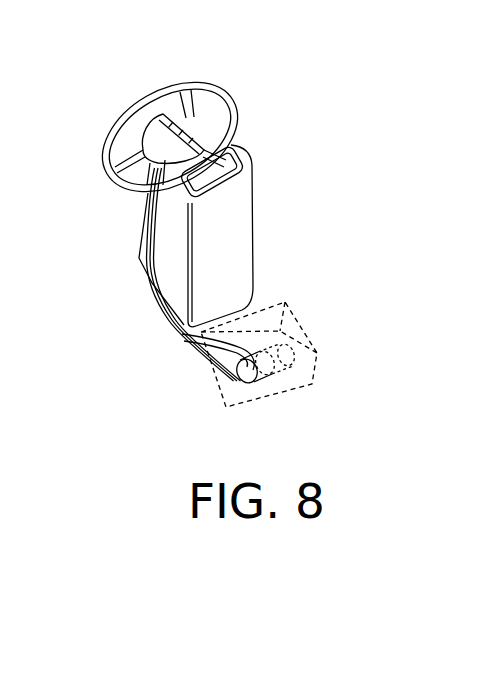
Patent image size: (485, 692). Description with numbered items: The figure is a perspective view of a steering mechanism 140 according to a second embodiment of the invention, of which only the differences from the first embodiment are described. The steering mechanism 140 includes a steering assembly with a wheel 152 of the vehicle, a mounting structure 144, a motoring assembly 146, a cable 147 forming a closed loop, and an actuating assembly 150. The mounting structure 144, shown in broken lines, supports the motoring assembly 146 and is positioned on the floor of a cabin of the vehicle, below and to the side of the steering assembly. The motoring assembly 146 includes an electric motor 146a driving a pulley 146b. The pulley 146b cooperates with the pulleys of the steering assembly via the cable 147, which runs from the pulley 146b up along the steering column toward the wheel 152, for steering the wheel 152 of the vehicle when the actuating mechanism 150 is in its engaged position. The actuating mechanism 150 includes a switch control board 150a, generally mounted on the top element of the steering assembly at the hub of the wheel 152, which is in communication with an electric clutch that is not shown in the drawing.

The steering mechanism 140 is at (138, 332).
The mounting structure 144 is at (297, 318).
The motoring assembly 146 is at (335, 390).
The electric motor 146a is at (296, 367).
The pulley 146b is at (265, 383).
The cable 147 is at (173, 345).
The actuating assembly 150 is at (202, 121).
The switch control board 150a is at (172, 108).
The wheel 152 is at (230, 88).